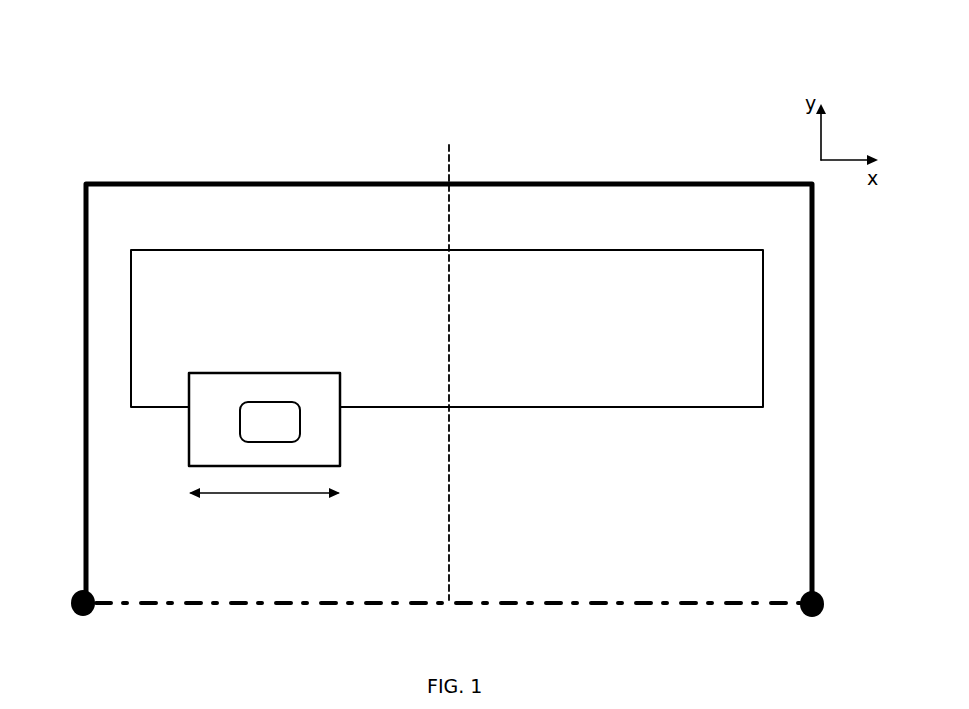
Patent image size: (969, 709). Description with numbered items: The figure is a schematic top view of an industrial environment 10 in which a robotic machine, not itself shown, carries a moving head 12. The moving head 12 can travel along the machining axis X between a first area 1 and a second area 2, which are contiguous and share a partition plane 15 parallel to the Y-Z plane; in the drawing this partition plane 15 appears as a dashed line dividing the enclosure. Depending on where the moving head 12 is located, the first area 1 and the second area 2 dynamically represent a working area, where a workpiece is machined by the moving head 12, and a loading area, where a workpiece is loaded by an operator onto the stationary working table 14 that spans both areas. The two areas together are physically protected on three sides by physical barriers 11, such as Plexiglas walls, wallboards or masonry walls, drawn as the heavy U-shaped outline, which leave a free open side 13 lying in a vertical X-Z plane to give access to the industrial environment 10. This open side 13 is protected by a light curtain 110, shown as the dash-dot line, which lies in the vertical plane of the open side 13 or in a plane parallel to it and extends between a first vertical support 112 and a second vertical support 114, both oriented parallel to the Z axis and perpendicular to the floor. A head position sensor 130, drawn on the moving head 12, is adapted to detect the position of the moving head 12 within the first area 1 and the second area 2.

The industrial environment 10 is at (150, 121).
The physical barriers 11 is at (296, 183).
The first area 1 is at (418, 211).
The second area 2 is at (790, 211).
The moving head 12 is at (340, 440).
The open side 13 is at (714, 612).
The working table 14 is at (612, 410).
The partition plane 15 is at (450, 178).
The light curtain 110 is at (247, 626).
The first vertical support 112 is at (80, 590).
The second vertical support 114 is at (815, 591).
The head position sensor 130 is at (270, 422).